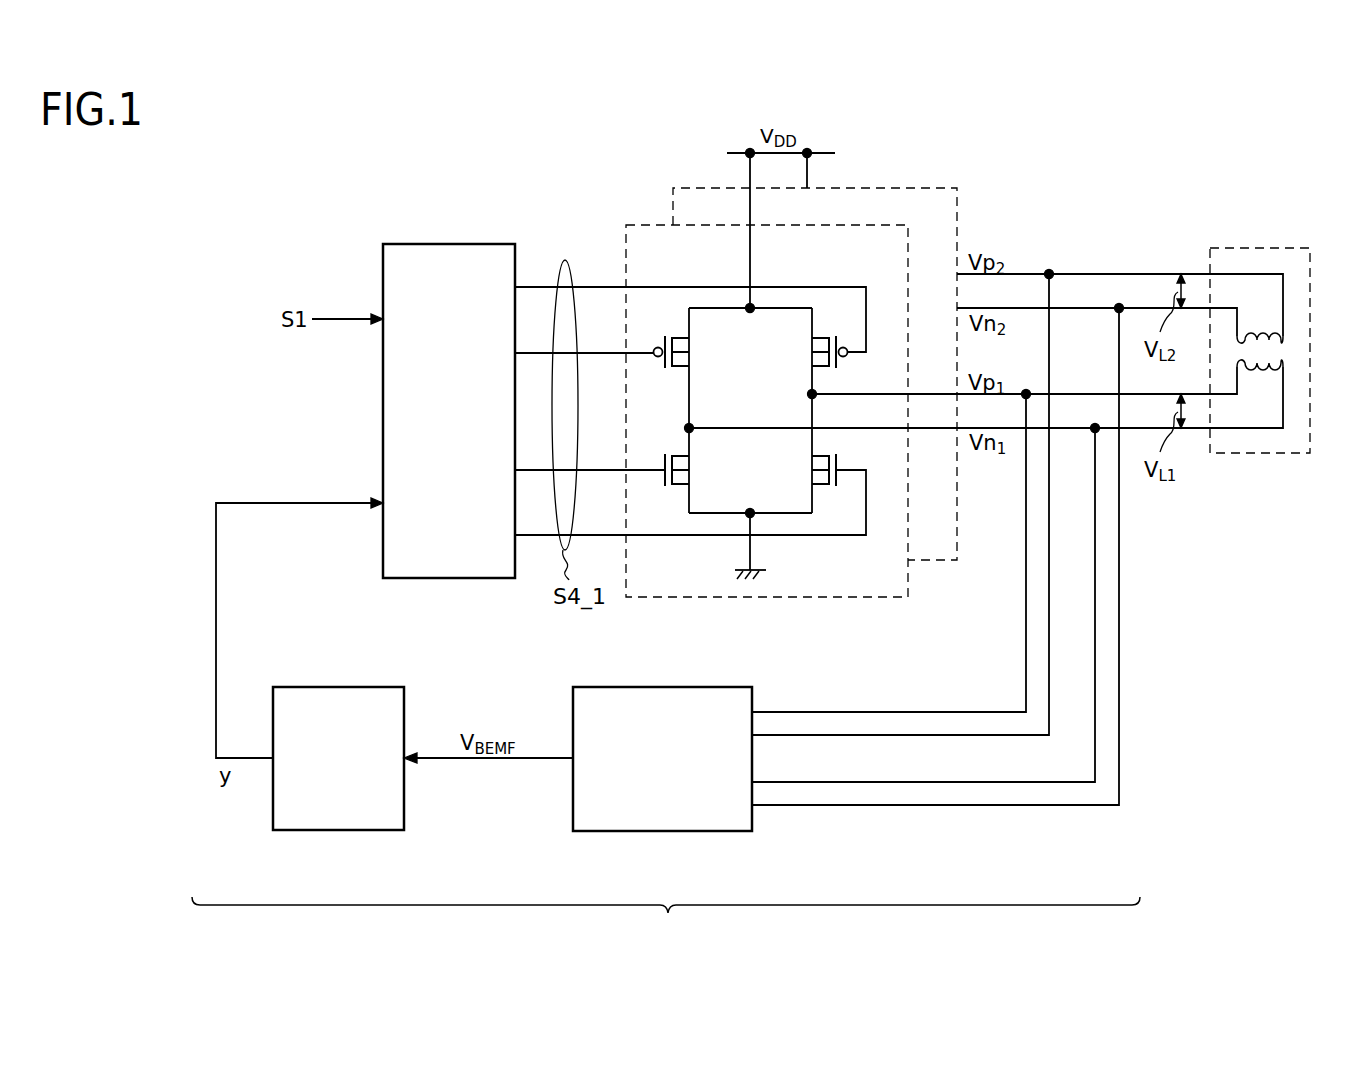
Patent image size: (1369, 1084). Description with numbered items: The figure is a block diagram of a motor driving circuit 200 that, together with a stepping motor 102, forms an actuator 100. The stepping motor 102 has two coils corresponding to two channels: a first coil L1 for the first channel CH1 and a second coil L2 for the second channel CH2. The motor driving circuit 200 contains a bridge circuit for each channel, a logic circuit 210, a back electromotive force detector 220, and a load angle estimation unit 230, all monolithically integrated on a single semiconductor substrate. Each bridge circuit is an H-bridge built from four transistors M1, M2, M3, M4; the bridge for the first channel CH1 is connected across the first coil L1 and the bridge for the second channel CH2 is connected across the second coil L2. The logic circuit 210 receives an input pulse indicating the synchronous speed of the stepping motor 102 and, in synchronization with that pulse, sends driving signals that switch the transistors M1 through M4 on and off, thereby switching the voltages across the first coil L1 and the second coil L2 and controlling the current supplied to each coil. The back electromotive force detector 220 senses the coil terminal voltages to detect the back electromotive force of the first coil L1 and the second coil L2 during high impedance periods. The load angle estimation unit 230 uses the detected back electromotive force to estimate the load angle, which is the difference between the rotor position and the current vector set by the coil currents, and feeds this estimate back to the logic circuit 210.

The actuator 100 is at (1344, 121).
The stepping motor 102 is at (1283, 326).
The motor driving circuit 200 is at (666, 923).
The logic circuit 210 is at (460, 244).
The back electromotive force detector 220 is at (677, 832).
The load angle estimation unit 230 is at (347, 831).
The first channel CH1 is at (767, 411).
The second channel CH2 is at (939, 561).
The transistor M1 is at (700, 357).
The transistor M2 is at (810, 356).
The transistor M3 is at (693, 464).
The transistor M4 is at (809, 460).
The first coil L1 is at (1283, 364).
The second coil L2 is at (1283, 338).